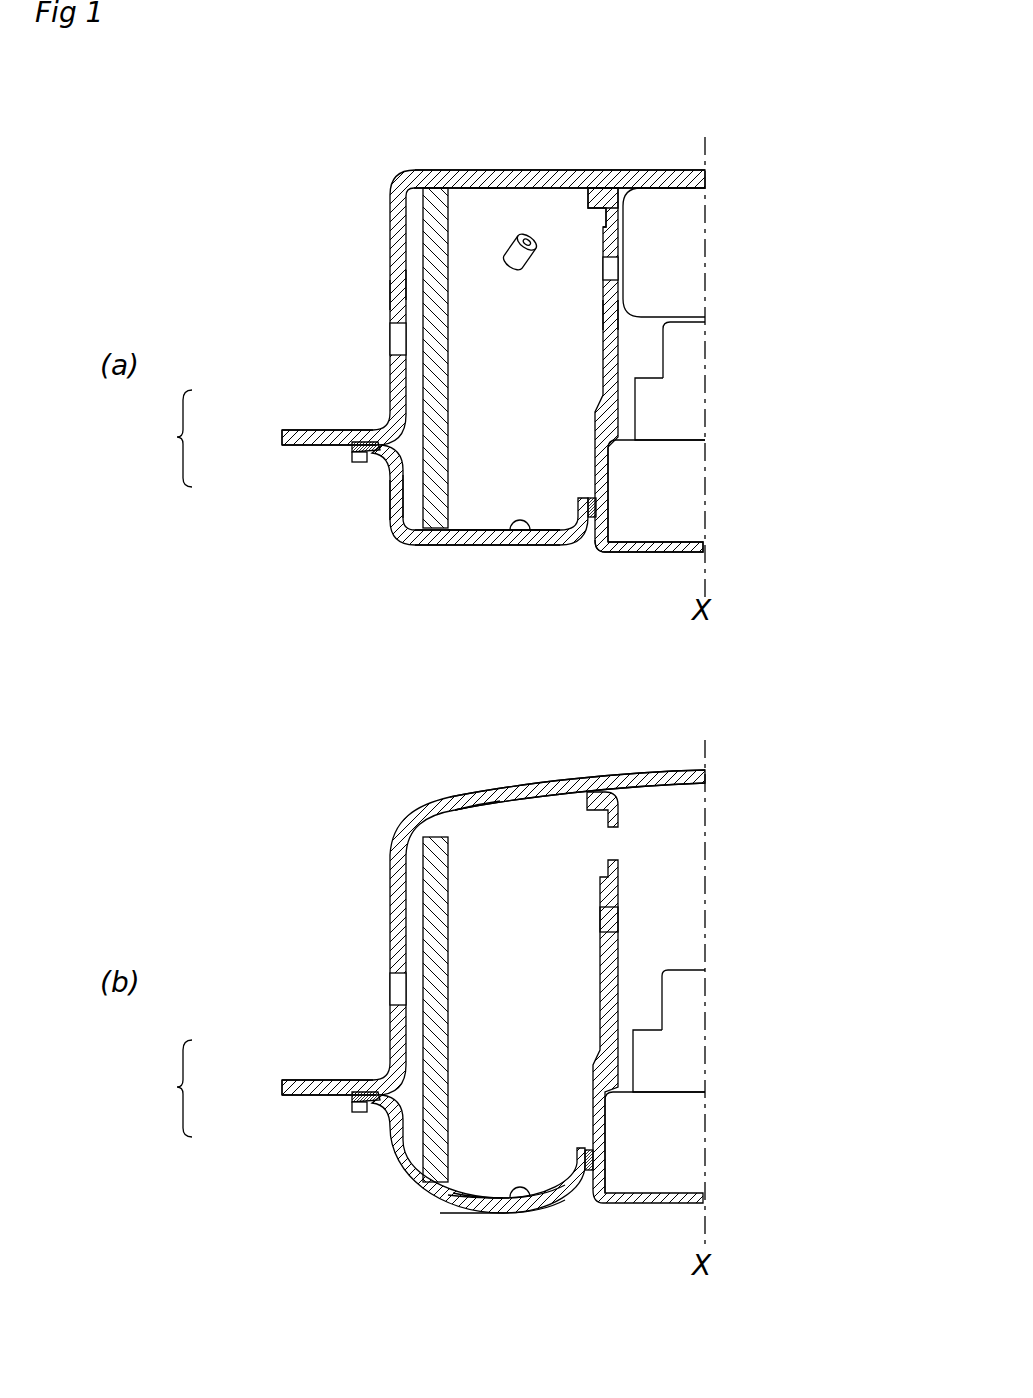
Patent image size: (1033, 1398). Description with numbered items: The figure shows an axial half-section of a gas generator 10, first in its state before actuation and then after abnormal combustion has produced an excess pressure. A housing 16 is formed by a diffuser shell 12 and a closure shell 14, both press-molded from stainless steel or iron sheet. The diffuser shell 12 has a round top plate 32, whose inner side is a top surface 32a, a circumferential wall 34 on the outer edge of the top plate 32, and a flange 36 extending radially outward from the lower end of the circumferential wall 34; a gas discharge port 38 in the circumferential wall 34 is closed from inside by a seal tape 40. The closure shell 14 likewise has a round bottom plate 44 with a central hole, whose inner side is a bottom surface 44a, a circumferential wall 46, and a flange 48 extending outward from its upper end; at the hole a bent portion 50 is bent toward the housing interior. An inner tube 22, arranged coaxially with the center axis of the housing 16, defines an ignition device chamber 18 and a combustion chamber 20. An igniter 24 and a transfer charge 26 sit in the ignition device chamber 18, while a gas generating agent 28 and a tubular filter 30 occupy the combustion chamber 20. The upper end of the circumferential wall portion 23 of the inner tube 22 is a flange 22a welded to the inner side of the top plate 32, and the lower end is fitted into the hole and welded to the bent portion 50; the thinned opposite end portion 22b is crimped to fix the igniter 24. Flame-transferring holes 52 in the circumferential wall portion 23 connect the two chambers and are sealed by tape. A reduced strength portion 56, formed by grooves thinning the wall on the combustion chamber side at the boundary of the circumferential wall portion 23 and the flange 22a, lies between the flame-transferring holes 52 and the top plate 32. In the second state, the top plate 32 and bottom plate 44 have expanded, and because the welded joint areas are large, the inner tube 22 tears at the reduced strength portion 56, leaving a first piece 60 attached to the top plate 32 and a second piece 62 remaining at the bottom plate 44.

The gas generator 10 is at (665, 152).
The diffuser shell 12 is at (388, 387).
The closure shell 14 is at (388, 503).
The housing 16 is at (168, 763).
The ignition device chamber 18 is at (655, 757).
The combustion chamber 20 is at (504, 806).
The inner tube 22 is at (603, 350).
The flange 22a is at (598, 192).
The opposite end portion 22b is at (610, 550).
The circumferential wall portion 23 is at (604, 313).
The igniter 24 is at (685, 410).
The transfer charge 26 is at (685, 256).
The gas generating agent 28 is at (511, 255).
The tubular filter 30 is at (450, 340).
The top plate 32 is at (513, 178).
The top surface 32a is at (478, 188).
The circumferential wall 34 is at (390, 292).
The flange 36 is at (338, 432).
The gas discharge port 38 is at (392, 340).
The seal tape 40 is at (407, 293).
The bottom plate 44 is at (483, 543).
The bottom surface 44a is at (533, 534).
The circumferential wall 46 is at (388, 517).
The flange 48 is at (367, 461).
The bent portion 50 is at (578, 510).
The flame-transferring holes 52 is at (605, 270).
The reduced strength portion 56 is at (605, 217).
The first piece 60 is at (597, 800).
The second piece 62 is at (603, 993).